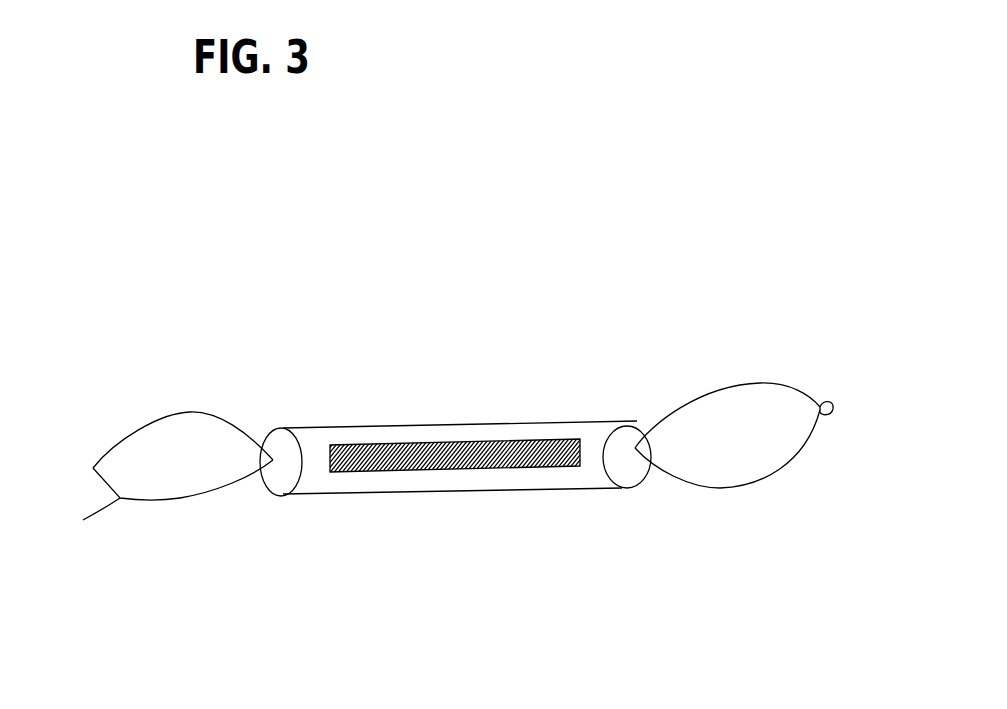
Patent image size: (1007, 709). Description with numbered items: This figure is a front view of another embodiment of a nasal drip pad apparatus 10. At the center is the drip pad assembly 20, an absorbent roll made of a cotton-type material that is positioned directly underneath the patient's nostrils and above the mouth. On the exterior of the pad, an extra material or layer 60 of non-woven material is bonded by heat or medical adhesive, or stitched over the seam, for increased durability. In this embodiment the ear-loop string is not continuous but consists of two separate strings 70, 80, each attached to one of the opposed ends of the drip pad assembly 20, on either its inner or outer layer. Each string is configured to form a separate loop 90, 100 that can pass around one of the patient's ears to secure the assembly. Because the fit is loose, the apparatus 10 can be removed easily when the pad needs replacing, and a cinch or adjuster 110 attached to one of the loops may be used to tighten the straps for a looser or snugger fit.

The apparatus 10 is at (573, 428).
The drip pad assembly 20 is at (378, 545).
The extra material or layer 60 is at (500, 468).
The first string 70 is at (230, 412).
The second string 80 is at (802, 378).
The first loop 90 is at (75, 534).
The second loop 100 is at (787, 468).
The cinch or adjuster 110 is at (832, 412).